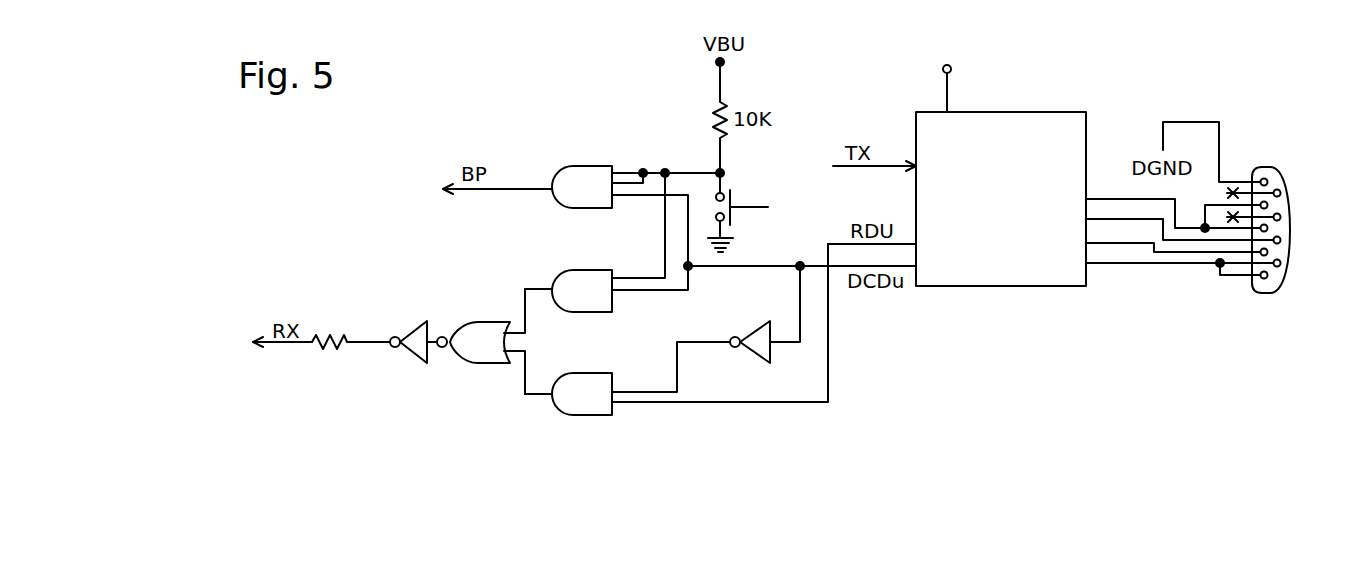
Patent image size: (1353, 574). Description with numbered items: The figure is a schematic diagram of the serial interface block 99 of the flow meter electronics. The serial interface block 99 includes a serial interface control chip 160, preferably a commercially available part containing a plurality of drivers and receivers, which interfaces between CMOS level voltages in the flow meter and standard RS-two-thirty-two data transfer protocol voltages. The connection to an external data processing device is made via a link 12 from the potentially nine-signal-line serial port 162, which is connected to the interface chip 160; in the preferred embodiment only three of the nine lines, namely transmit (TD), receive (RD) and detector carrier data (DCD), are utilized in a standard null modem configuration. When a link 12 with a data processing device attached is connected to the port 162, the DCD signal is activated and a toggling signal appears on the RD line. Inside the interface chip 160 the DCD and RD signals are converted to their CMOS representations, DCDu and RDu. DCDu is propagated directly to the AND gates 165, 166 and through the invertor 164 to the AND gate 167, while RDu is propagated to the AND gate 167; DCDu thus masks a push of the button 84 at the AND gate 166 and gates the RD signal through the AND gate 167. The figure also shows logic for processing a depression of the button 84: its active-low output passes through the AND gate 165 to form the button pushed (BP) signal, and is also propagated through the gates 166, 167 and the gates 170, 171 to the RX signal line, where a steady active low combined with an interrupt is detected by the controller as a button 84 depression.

The link 12 is at (1117, 318).
The button 84 is at (740, 206).
The serial interface block 99 is at (1024, 63).
The serial interface control chip 160 is at (951, 240).
The serial port 162 is at (1219, 303).
The invertor 164 is at (760, 363).
The AND gate 165 is at (603, 197).
The AND gate 166 is at (603, 300).
The AND gate 167 is at (603, 404).
The gate 170 is at (496, 351).
The gate 171 is at (417, 363).